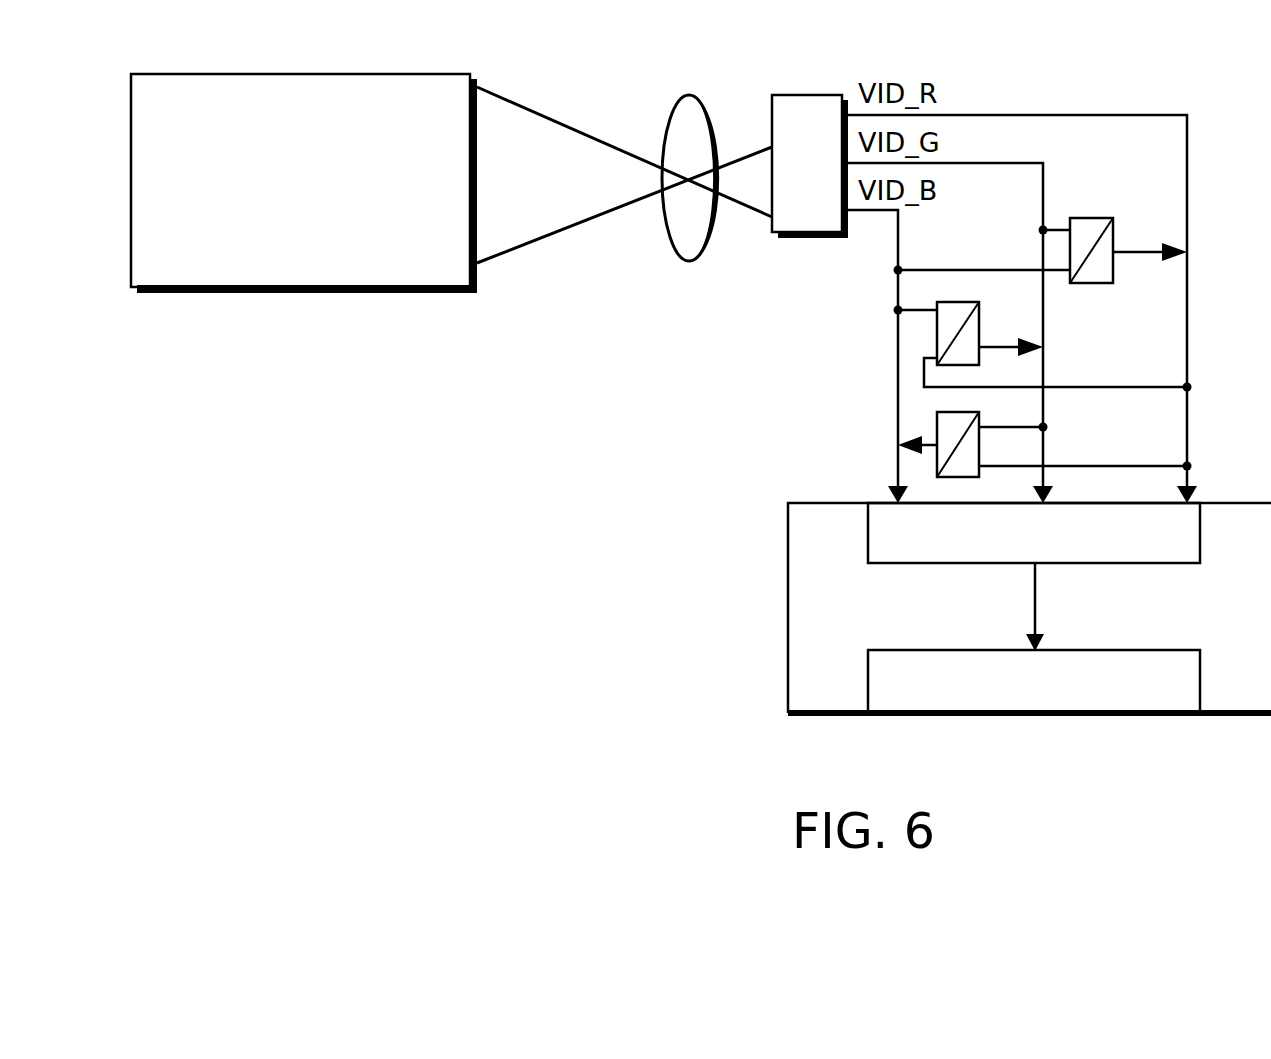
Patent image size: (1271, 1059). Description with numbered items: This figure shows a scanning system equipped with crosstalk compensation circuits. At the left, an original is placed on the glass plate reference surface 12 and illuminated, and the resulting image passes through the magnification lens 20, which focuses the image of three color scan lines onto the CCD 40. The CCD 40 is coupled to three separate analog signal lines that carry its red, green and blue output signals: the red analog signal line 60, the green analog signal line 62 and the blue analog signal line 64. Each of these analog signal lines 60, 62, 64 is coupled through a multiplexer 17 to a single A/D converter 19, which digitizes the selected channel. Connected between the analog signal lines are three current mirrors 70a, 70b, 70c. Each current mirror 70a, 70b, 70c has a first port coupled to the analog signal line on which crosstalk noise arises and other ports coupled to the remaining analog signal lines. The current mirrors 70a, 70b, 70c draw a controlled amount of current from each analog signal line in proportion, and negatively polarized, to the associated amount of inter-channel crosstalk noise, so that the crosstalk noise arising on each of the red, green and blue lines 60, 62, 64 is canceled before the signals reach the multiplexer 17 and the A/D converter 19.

The glass plate reference surface 12 is at (252, 74).
The magnification lens 20 is at (688, 95).
The CCD 40 is at (800, 95).
The red analog signal line 60 is at (1190, 213).
The green analog signal line 62 is at (1047, 168).
The blue analog signal line 64 is at (902, 249).
The current mirror 70a is at (1113, 237).
The current mirror 70b is at (979, 318).
The current mirror 70c is at (979, 418).
The multiplexer 17 is at (1202, 540).
The A/D converter 19 is at (1202, 688).